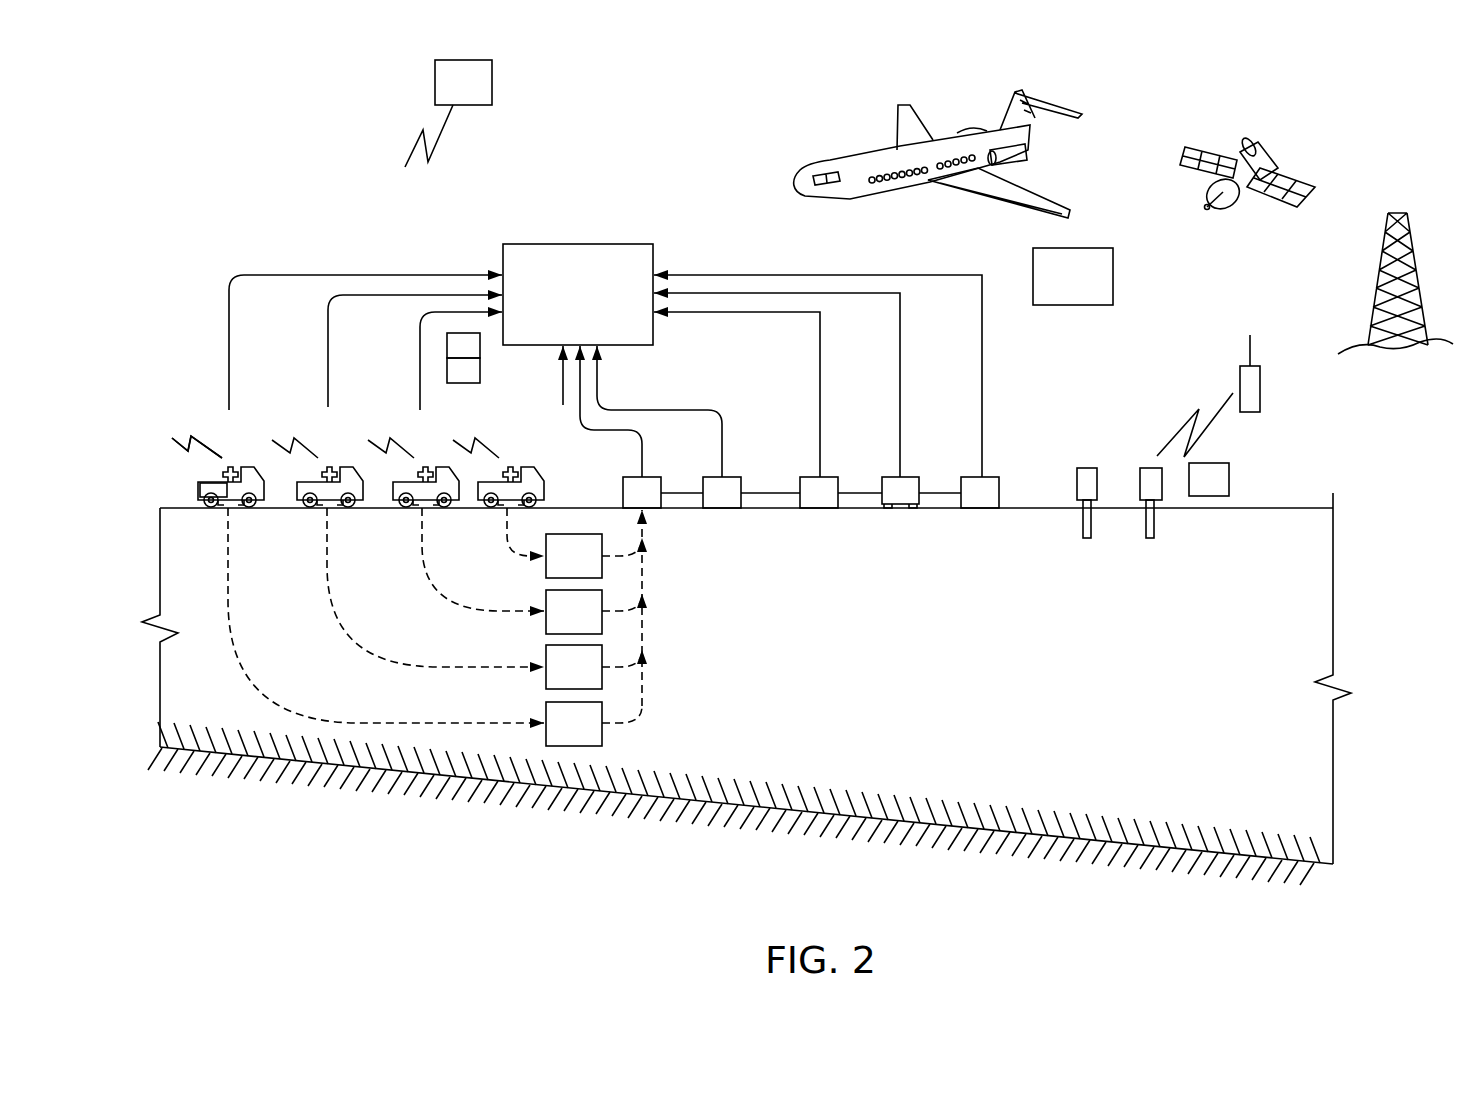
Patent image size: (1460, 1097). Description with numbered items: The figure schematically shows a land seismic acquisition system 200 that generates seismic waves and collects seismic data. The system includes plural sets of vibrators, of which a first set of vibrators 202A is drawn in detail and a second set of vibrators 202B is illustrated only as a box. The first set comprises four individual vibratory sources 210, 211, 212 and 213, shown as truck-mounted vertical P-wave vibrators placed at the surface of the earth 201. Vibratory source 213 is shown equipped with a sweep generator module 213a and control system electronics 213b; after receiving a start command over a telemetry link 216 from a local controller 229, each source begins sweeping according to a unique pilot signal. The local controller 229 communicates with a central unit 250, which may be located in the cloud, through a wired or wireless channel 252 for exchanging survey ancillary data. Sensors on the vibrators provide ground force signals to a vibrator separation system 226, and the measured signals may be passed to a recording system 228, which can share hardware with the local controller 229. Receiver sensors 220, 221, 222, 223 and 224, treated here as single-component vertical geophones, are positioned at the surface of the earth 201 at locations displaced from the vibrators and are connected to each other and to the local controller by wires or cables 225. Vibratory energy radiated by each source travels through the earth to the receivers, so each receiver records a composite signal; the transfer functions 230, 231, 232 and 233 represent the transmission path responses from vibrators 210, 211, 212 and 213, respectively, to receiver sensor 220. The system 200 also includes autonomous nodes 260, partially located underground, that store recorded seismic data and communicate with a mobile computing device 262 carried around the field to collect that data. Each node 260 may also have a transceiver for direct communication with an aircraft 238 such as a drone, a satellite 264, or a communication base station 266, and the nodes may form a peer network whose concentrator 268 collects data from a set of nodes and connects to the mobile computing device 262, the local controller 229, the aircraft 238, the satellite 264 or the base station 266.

The land seismic acquisition system 200 is at (1310, 98).
The surface of the earth 201 is at (1058, 503).
The first set of vibrators 202A is at (222, 340).
The second set of vibrators 202B is at (1103, 290).
The vibratory source 210 is at (521, 467).
The vibratory source 211 is at (436, 467).
The vibratory source 212 is at (343, 467).
The vibratory source 213 is at (241, 467).
The sweep generator module 213a is at (198, 485).
The control system electronics 213b is at (218, 482).
The telemetry link 216 is at (200, 427).
The receiver sensor 220 is at (650, 477).
The receiver sensor 221 is at (730, 477).
The receiver sensor 222 is at (828, 477).
The receiver sensor 223 is at (908, 477).
The receiver sensor 224 is at (988, 477).
The wires or cables 225 is at (772, 493).
The vibrator separation system 226 is at (580, 244).
The recording system 228 is at (447, 344).
The local controller 229 is at (447, 372).
The transfer function 230 is at (553, 568).
The transfer function 231 is at (553, 624).
The transfer function 232 is at (553, 679).
The transfer function 233 is at (553, 736).
The aircraft 238 is at (882, 138).
The central unit 250 is at (492, 80).
The wired or wireless channel 252 is at (450, 122).
The autonomous nodes 260 is at (1087, 468).
The mobile computing device 262 is at (1260, 388).
The satellite 264 is at (1240, 148).
The communication base station 266 is at (1397, 212).
The concentrator 268 is at (1229, 478).